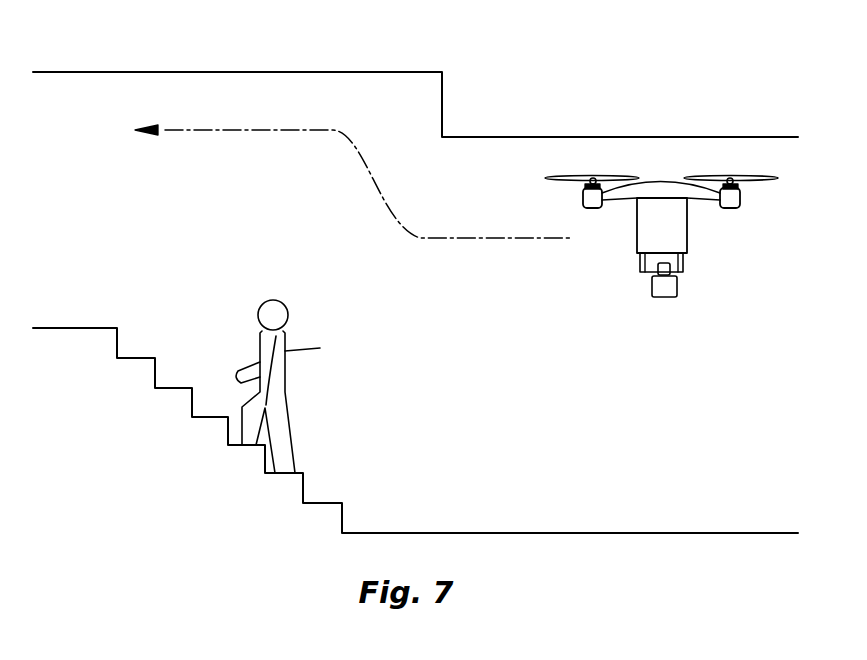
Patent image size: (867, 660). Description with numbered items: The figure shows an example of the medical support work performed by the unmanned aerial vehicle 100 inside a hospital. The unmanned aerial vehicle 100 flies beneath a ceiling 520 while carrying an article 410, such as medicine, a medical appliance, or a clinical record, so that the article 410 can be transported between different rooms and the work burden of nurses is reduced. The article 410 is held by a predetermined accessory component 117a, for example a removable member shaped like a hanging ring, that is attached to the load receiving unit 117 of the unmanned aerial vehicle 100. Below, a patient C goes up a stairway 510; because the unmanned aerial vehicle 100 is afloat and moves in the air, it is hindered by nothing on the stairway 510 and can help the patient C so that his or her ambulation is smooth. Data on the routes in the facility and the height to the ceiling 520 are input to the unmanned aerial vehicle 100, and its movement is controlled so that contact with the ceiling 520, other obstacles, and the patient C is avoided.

The ceiling 520 is at (335, 62).
The stairway 510 is at (210, 425).
The patient C is at (287, 386).
The unmanned aerial vehicle 100 is at (700, 237).
The load receiving unit 117 is at (637, 257).
The accessory component 117a is at (667, 267).
The article 410 is at (663, 293).